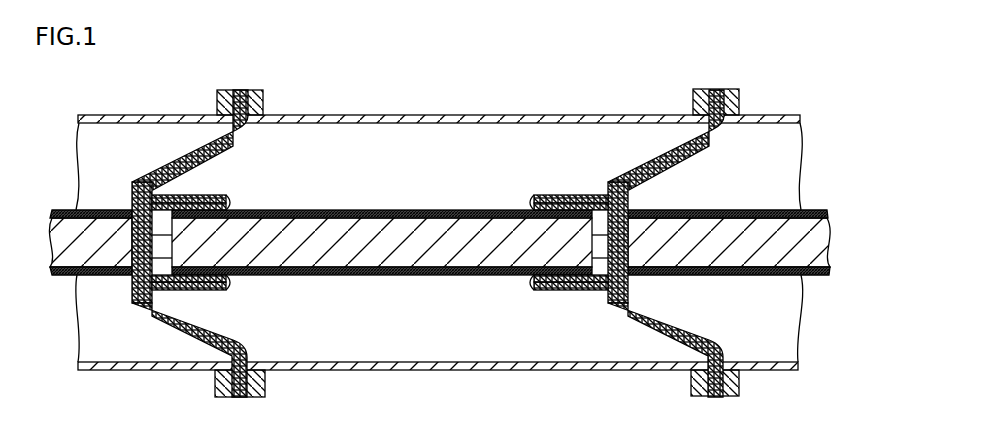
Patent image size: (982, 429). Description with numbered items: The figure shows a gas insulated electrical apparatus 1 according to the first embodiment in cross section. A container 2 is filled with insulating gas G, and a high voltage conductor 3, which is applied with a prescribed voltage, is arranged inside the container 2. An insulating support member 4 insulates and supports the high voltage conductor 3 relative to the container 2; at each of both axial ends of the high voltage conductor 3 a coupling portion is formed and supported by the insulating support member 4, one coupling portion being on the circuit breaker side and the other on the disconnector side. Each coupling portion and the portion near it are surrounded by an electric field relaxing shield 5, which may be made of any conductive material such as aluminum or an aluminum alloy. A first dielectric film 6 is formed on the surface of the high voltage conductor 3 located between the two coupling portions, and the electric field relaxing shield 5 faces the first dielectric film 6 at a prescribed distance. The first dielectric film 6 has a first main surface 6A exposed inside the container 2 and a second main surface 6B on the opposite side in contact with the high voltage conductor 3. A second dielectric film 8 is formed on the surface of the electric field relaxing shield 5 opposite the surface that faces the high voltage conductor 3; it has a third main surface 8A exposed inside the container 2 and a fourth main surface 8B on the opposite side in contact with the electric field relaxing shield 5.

The gas insulated electrical apparatus 1 is at (814, 90).
The container 2 is at (650, 123).
The high voltage conductor 3 is at (110, 235).
The insulating support member 4 is at (193, 290).
The electric field relaxing shield 5 is at (231, 203).
The first dielectric film 6 is at (81, 209).
The first main surface 6A is at (440, 210).
The second main surface 6B is at (370, 210).
The second dielectric film 8 is at (150, 192).
The third main surface 8A is at (213, 197).
The fourth main surface 8B is at (265, 233).
The insulating gas G is at (610, 138).